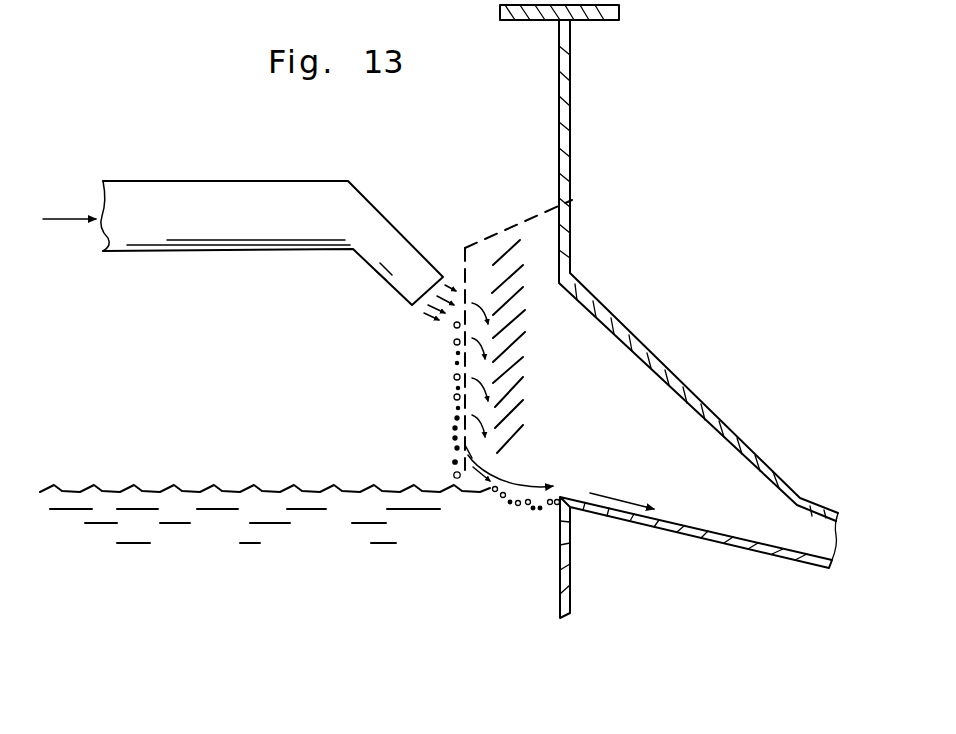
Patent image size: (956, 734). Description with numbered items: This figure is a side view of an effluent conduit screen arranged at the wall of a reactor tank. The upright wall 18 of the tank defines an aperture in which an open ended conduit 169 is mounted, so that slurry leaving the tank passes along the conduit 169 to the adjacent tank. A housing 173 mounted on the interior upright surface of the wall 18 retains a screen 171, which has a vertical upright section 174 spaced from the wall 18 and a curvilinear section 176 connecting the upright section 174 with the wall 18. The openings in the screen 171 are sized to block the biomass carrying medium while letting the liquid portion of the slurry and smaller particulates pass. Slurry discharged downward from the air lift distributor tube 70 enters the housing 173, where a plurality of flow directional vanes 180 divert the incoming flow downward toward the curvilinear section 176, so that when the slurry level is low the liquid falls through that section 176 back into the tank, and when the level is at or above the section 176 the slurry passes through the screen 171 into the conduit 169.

The upright wall 18 is at (571, 197).
The distributor tube 70 is at (273, 230).
The housing 173 is at (494, 235).
The screen 171 is at (458, 349).
The upright section 174 is at (455, 398).
The flow directional vanes 180 is at (513, 392).
The curvilinear section 176 is at (520, 518).
The conduit 169 is at (740, 548).